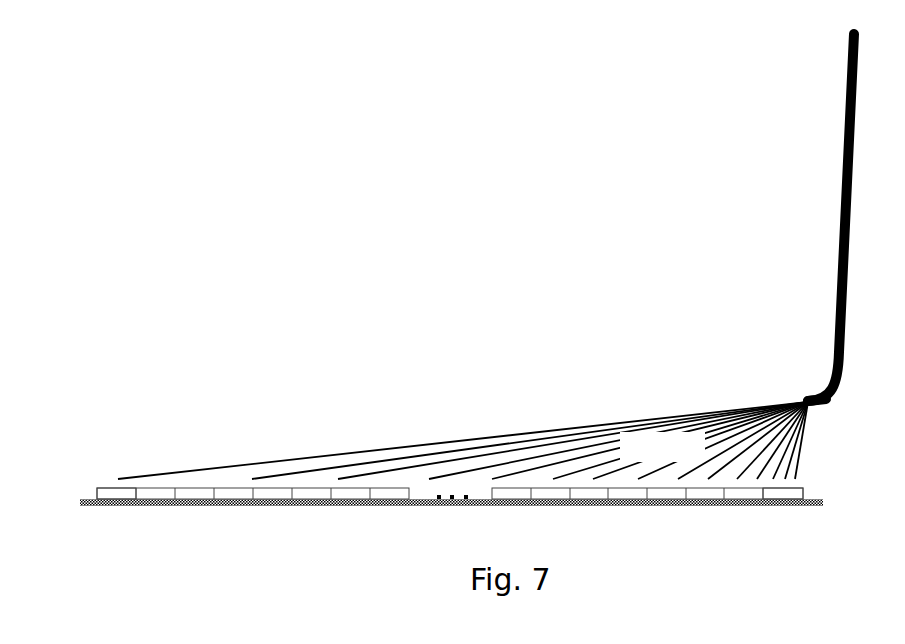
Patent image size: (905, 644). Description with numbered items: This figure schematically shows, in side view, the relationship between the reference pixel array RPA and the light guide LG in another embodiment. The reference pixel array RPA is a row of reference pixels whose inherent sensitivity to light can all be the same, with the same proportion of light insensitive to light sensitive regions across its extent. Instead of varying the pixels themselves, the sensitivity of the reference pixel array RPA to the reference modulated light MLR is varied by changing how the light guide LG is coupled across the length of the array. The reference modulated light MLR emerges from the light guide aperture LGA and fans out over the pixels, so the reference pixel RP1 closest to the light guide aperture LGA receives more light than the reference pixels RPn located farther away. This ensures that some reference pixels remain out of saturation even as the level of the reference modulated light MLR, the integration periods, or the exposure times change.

The light guide LG is at (837, 192).
The light guide aperture LGA is at (804, 397).
The reference modulated light MLR is at (606, 430).
The reference pixel array RPA is at (414, 394).
The reference pixel RP1 is at (787, 500).
The reference pixels RPn is at (128, 490).